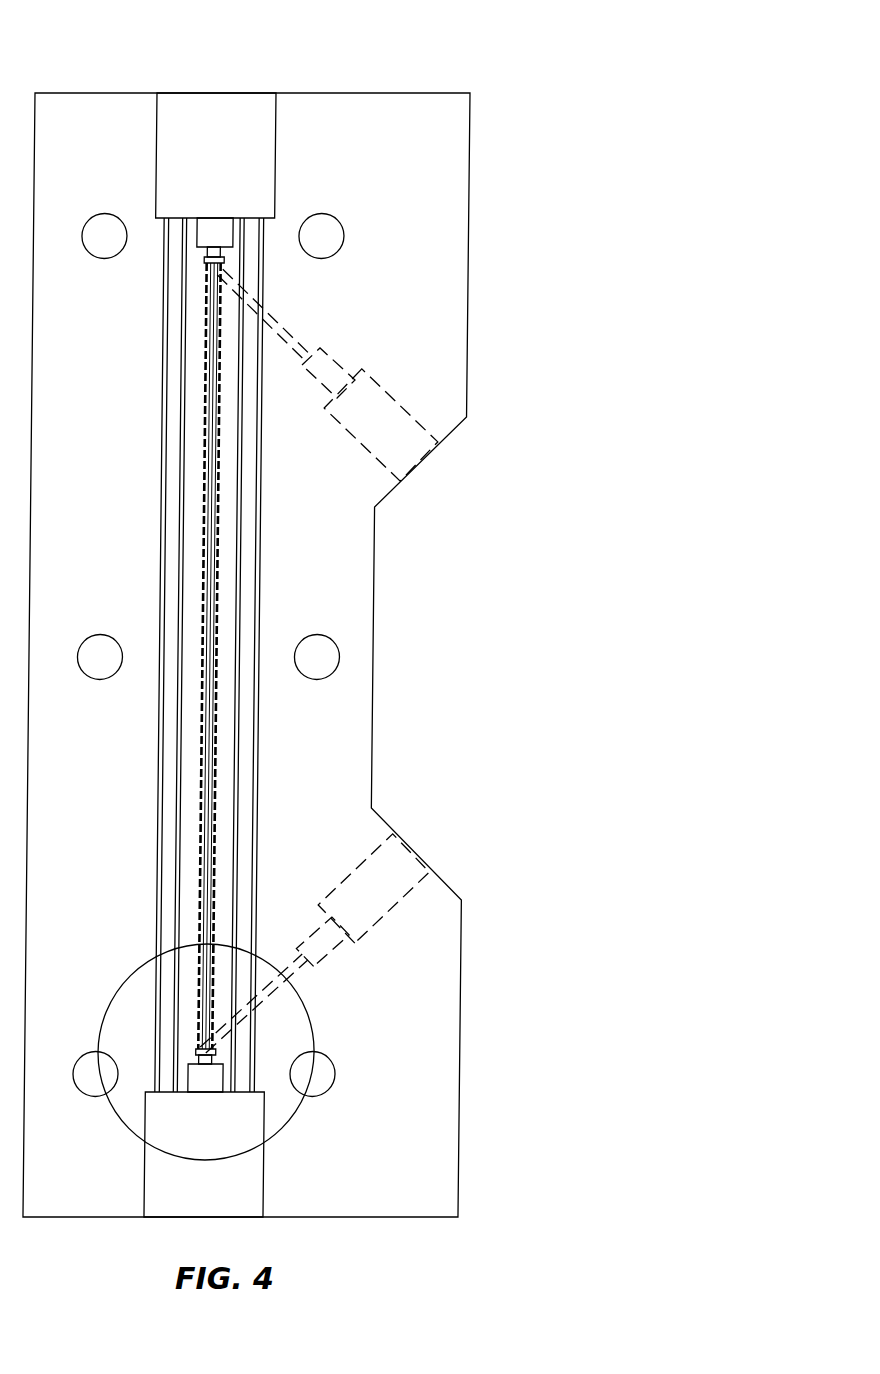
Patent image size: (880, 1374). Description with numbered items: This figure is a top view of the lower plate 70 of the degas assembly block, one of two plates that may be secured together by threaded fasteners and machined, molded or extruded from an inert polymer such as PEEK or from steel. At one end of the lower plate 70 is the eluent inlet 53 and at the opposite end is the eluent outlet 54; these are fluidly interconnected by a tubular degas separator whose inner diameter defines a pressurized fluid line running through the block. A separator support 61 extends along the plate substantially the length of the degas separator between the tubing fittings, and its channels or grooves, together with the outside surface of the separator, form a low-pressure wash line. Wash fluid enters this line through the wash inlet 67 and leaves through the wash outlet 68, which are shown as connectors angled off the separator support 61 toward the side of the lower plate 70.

The lower plate 70 is at (448, 127).
The eluent outlet 54 is at (272, 127).
The eluent inlet 53 is at (148, 1203).
The separator support 61 is at (205, 508).
The wash inlet 67 is at (427, 440).
The wash outlet 68 is at (418, 880).